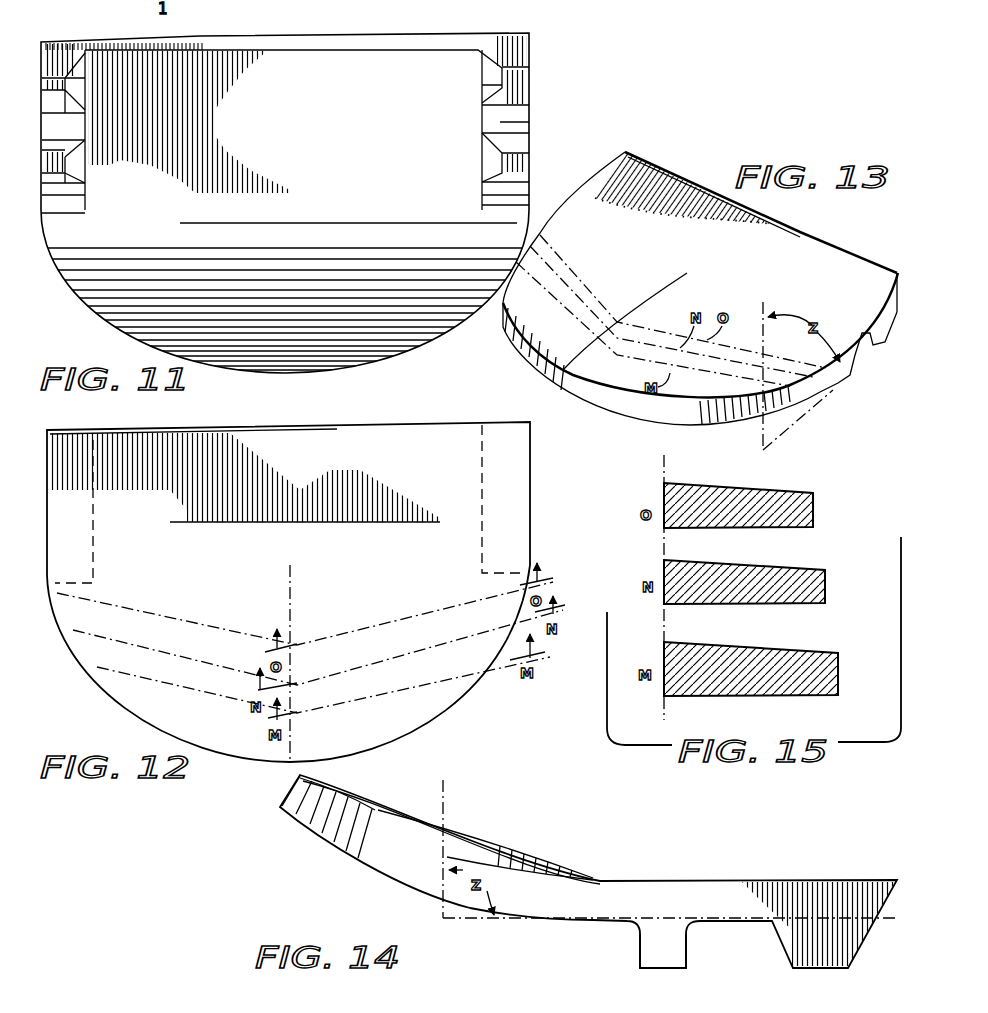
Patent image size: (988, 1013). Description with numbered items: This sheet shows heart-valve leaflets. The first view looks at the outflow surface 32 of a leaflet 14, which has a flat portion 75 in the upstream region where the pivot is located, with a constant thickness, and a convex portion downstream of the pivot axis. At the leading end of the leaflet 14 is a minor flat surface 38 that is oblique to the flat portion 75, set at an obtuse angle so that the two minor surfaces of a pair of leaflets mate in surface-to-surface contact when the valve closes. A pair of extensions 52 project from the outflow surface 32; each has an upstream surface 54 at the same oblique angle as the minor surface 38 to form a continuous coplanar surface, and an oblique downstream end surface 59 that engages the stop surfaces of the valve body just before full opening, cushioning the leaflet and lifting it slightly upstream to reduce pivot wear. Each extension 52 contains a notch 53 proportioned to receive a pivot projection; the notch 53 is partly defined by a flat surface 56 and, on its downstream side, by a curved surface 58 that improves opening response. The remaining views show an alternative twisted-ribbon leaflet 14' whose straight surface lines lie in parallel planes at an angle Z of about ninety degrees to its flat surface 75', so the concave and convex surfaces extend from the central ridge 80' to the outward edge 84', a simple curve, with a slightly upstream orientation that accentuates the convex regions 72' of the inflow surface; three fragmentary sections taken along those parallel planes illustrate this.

In FIG. 11, the leaflet 14 is at (285, 186).
In FIG. 11, the minor flat surface 38 is at (402, 44).
In FIG. 11, the upstream surface 54 is at (530, 42).
In FIG. 11, the extensions 52 is at (537, 67).
In FIG. 11, the flat surface 56 is at (531, 97).
In FIG. 11, the notches 53 is at (513, 121).
In FIG. 11, the curved surface 58 is at (517, 141).
In FIG. 11, the downstream end surfaces 59 is at (515, 181).
In FIG. 11, the outflow surface 32 is at (73, 233).
In FIG. 11, the flat portion 75 is at (285, 238).
In FIG. 12, the leaflet 14' is at (288, 571).
In FIG. 13, the leaflet 14' is at (700, 210).
In FIG. 14, the leaflet 14' is at (588, 871).
In FIG. 12, the central ridge 80' is at (308, 663).
In FIG. 13, the central ridge 80' is at (625, 319).
In FIG. 14, the central ridge 80' is at (485, 838).
In FIG. 15, the central ridge 80' is at (751, 579).
In FIG. 12, the convex regions 72' is at (310, 647).
In FIG. 13, the convex regions 72' is at (700, 360).
In FIG. 14, the convex regions 72' is at (351, 811).
In FIG. 14, the outward edge 84' is at (520, 853).
In FIG. 15, the outward edge 84' is at (843, 583).
In FIG. 14, the flat surface 75' is at (700, 945).